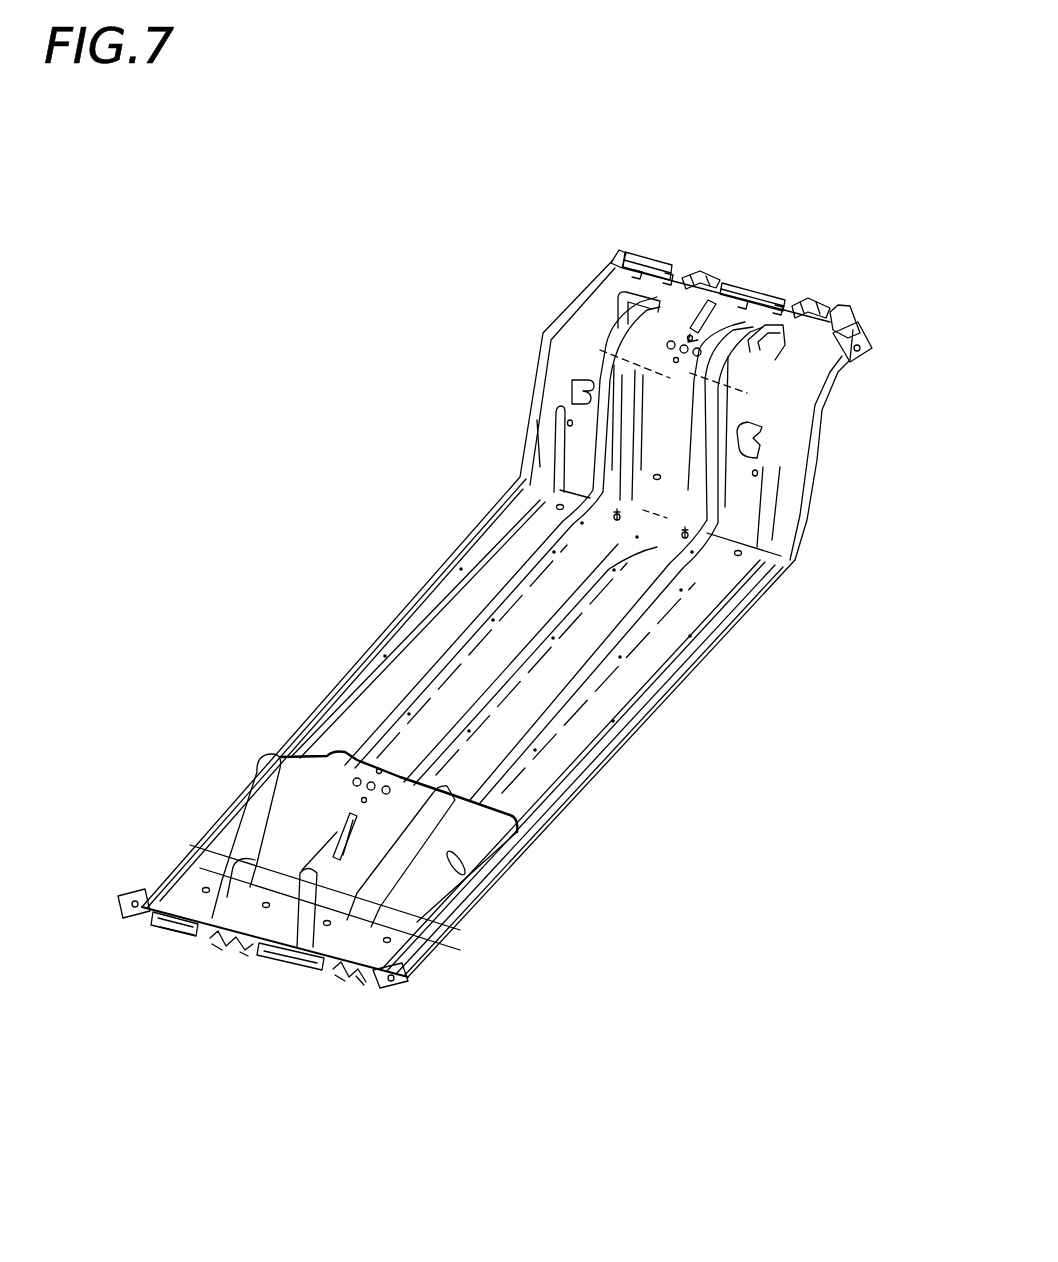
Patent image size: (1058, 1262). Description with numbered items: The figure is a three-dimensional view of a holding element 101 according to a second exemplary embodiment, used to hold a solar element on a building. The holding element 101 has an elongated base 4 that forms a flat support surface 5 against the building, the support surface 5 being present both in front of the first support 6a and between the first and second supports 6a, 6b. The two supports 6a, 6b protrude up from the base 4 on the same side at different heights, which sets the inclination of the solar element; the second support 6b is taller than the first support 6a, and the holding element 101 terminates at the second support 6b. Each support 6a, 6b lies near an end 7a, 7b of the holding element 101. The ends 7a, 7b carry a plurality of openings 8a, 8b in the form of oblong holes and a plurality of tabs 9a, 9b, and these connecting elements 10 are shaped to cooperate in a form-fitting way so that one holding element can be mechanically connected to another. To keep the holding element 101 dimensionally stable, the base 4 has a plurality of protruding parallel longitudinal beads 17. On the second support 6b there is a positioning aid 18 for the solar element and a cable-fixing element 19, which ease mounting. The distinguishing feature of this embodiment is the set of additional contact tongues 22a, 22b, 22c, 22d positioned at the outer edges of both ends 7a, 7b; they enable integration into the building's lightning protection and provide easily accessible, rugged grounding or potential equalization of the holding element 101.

The holding element 101 is at (385, 440).
The elongated base 4 is at (655, 633).
The flat support surface 5 is at (652, 728).
The first support 6a is at (320, 800).
The second support 6b is at (600, 300).
The first end 7a is at (362, 995).
The second end 7b is at (862, 315).
The opening 8a is at (647, 258).
The opening 8b is at (770, 284).
The tab 9a is at (705, 270).
The tab 9b is at (818, 296).
The connecting elements 10 is at (746, 266).
The longitudinal beads 17 is at (608, 637).
The positioning aid 18 is at (716, 327).
The cable-fixing element 19 is at (568, 388).
The contact tongue 22a is at (407, 975).
The contact tongue 22b is at (143, 898).
The contact tongue 22c is at (873, 343).
The contact tongue 22d is at (607, 263).